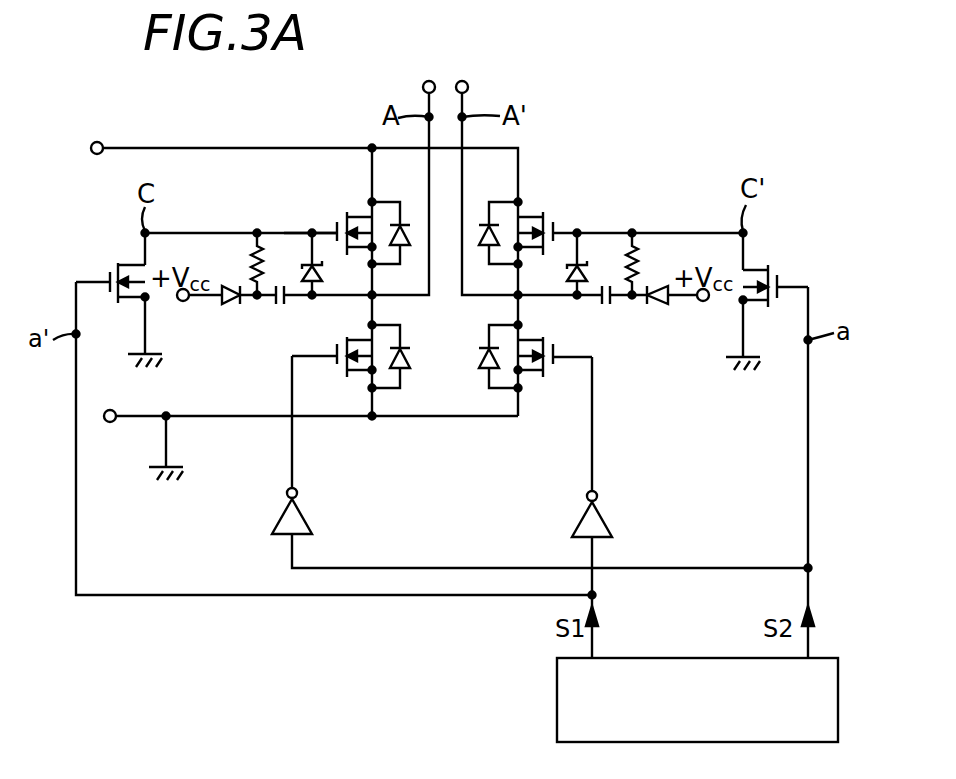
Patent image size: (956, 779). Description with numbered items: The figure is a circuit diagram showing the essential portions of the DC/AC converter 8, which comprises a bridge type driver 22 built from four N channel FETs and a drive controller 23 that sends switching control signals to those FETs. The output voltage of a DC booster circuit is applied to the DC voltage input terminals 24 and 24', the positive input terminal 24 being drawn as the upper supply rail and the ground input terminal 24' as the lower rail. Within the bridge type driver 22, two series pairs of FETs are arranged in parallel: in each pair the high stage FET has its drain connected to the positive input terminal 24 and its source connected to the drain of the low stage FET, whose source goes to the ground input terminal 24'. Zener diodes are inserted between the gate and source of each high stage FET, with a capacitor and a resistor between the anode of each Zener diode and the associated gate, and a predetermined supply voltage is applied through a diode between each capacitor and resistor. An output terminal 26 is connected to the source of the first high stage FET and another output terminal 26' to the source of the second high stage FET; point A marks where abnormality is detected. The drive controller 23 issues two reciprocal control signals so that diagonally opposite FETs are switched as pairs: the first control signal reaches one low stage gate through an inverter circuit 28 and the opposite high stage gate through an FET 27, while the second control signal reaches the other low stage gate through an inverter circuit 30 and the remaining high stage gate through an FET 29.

The DC/AC converter 8 is at (682, 126).
The bridge type driver 22 is at (564, 143).
The drive controller 23 is at (557, 697).
The positive input terminal 24 is at (81, 119).
The ground input terminal 24' is at (118, 443).
The output terminal 26 is at (403, 159).
The output terminal 26' is at (488, 159).
The FET 27 is at (107, 259).
The inverter circuit 28 is at (611, 510).
The FET 29 is at (786, 265).
The inverter circuit 30 is at (315, 511).